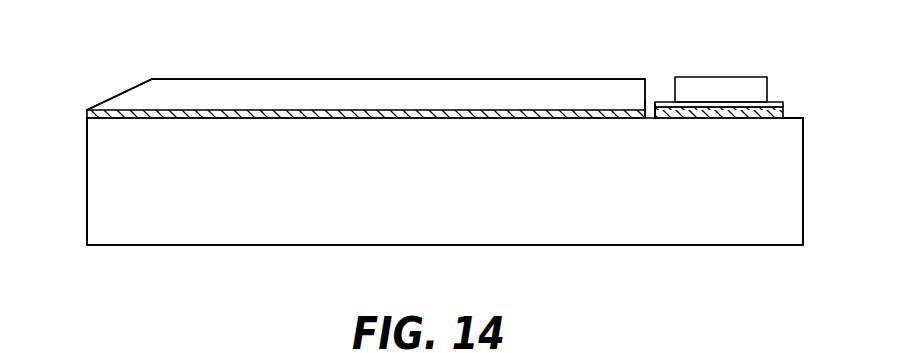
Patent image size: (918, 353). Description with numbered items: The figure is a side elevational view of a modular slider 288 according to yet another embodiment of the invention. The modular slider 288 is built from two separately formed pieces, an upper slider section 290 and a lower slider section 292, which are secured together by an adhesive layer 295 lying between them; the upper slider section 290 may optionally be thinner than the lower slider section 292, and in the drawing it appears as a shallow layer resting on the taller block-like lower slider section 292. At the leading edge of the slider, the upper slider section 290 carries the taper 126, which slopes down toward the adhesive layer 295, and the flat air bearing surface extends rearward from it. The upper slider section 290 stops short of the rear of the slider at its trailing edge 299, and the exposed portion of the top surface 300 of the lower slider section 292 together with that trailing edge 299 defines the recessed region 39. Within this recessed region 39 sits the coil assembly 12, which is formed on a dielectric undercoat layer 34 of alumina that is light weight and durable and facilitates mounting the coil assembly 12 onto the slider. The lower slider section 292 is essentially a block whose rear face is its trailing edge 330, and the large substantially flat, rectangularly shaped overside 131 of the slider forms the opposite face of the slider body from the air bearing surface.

The coil assembly 12 is at (746, 75).
The undercoat layer 34 is at (772, 105).
The recessed region 39 is at (653, 114).
The taper 126 is at (118, 94).
The overside 131 is at (462, 247).
The modular slider 288 is at (395, 29).
The upper slider section 290 is at (227, 93).
The lower slider section 292 is at (593, 218).
The adhesive layer 295 is at (330, 116).
The trailing edge of the upper slider section 299 is at (651, 115).
The top surface of the lower slider section 300 is at (792, 117).
The trailing edge of the lower slider section 330 is at (806, 218).